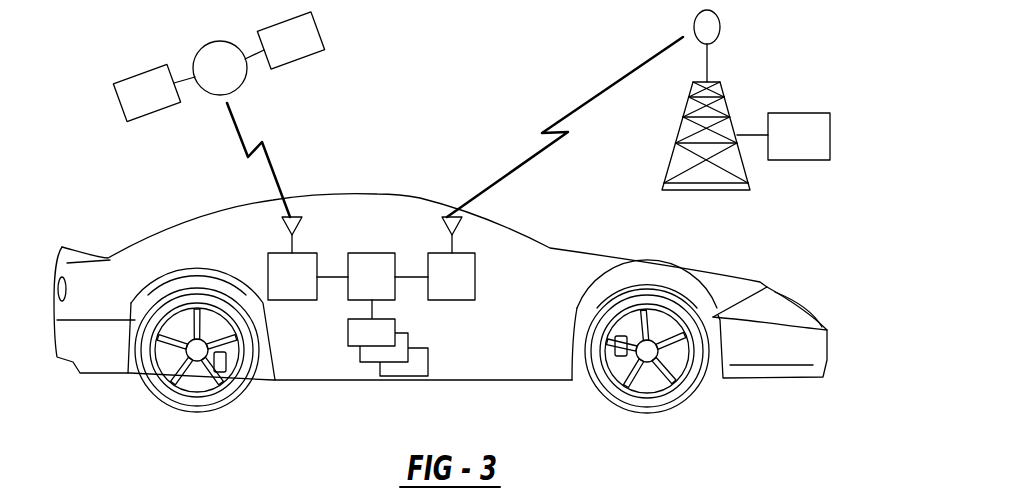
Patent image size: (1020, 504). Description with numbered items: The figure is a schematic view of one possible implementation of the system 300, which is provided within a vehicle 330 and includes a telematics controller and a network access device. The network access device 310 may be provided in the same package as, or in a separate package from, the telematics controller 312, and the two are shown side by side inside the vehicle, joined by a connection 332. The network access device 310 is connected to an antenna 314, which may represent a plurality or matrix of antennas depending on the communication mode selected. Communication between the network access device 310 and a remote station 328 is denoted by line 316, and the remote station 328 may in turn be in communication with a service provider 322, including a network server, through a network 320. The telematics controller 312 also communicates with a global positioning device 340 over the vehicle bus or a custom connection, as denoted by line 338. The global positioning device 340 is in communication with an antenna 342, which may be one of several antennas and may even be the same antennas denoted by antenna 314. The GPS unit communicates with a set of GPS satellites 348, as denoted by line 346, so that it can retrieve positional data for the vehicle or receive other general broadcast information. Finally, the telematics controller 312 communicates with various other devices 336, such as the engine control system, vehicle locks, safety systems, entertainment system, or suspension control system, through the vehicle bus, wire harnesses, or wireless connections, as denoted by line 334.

The system 300 is at (535, 64).
The network access device 310 is at (476, 270).
The telematics controller 312 is at (370, 253).
The antenna 314 is at (462, 231).
The line 316 is at (603, 92).
The network 320 is at (753, 134).
The service provider 322 is at (802, 162).
The remote station 328 is at (708, 63).
The vehicle 330 is at (781, 380).
The TCU-NAD connection 332 is at (410, 277).
The line 334 is at (373, 308).
The various other devices 336 is at (348, 328).
The line 338 is at (333, 277).
The global positioning device 340 is at (267, 268).
The antenna 342 is at (285, 232).
The line 346 is at (270, 163).
The GPS satellites 348 is at (211, 43).